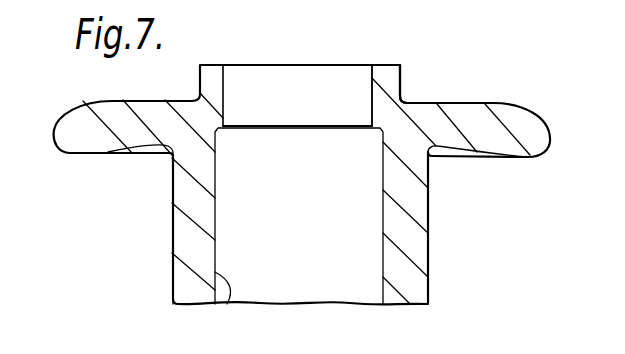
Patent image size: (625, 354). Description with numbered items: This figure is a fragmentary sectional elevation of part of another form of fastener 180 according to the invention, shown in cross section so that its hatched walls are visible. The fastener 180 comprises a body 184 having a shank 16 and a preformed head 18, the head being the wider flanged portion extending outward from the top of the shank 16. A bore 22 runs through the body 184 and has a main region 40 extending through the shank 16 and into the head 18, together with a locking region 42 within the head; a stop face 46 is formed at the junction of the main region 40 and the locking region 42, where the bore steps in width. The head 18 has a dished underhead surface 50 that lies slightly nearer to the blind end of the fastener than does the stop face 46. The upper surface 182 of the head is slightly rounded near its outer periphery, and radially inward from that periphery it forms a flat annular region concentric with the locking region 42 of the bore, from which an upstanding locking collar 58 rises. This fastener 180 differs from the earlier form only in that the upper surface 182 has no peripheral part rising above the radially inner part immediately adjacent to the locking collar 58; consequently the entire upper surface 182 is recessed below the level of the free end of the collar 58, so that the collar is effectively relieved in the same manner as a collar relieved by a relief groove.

The shank 16 is at (173, 273).
The preformed head 18 is at (60, 153).
The bore 22 is at (221, 306).
The main region of the bore 40 is at (311, 223).
The locking region of the bore 42 is at (320, 107).
The stop face 46 is at (353, 127).
The dished underhead surface 50 is at (143, 152).
The upstanding locking collar 58 is at (402, 80).
The fastener 180 is at (434, 247).
The upper surface of the head 182 is at (503, 100).
The body 184 is at (173, 233).